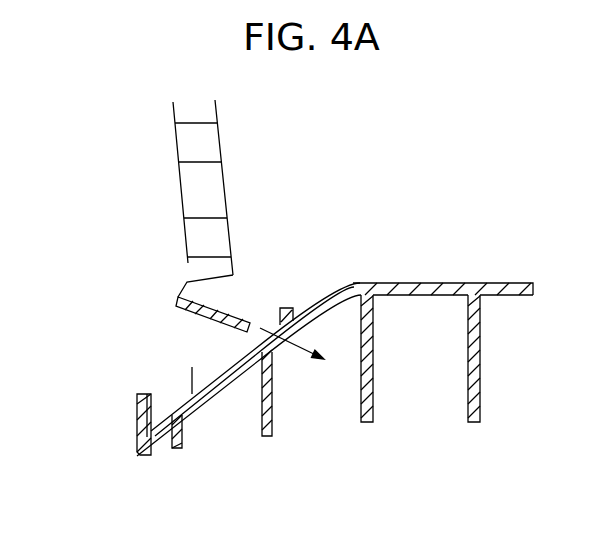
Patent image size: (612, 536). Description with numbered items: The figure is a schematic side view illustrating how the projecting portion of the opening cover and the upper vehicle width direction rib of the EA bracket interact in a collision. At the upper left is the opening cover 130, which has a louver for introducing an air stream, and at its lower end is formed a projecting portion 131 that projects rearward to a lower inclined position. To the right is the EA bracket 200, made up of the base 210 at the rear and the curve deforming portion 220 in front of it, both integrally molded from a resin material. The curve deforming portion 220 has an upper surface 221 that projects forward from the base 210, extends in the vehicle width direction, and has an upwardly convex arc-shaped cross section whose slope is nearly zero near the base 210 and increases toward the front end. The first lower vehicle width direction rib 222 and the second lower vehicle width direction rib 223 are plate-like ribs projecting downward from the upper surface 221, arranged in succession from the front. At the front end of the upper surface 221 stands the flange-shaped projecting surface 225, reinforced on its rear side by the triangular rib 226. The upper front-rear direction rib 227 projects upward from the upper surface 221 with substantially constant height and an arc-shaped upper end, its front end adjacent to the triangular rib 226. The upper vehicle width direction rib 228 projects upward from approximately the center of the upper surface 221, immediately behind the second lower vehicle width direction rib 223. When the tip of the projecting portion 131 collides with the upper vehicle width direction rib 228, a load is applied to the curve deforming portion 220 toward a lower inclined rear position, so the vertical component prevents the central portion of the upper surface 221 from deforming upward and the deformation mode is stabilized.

The opening cover 130 is at (192, 150).
The projecting portion 131 is at (178, 302).
The EA bracket 200 is at (527, 162).
The base 210 is at (470, 243).
The curve deforming portion 220 is at (333, 265).
The upper surface 221 is at (188, 393).
The first lower vehicle width direction rib 222 is at (175, 449).
The second lower vehicle width direction rib 223 is at (266, 440).
The projecting surface 225 is at (136, 398).
The triangular rib 226 is at (145, 415).
The upper front-rear direction rib 227 is at (215, 352).
The upper vehicle width direction rib 228 is at (288, 308).